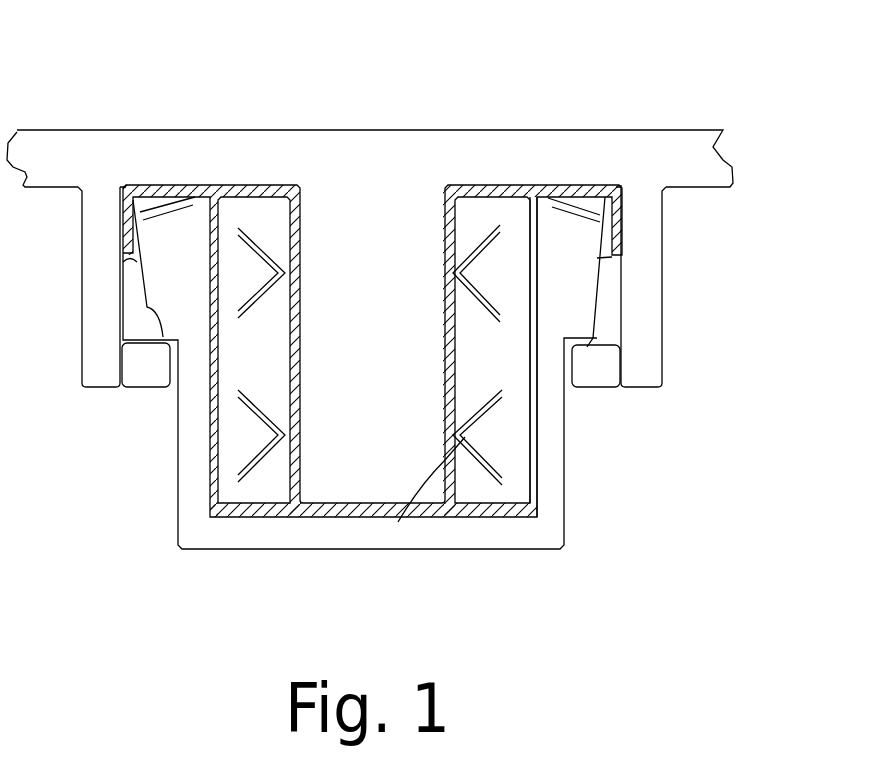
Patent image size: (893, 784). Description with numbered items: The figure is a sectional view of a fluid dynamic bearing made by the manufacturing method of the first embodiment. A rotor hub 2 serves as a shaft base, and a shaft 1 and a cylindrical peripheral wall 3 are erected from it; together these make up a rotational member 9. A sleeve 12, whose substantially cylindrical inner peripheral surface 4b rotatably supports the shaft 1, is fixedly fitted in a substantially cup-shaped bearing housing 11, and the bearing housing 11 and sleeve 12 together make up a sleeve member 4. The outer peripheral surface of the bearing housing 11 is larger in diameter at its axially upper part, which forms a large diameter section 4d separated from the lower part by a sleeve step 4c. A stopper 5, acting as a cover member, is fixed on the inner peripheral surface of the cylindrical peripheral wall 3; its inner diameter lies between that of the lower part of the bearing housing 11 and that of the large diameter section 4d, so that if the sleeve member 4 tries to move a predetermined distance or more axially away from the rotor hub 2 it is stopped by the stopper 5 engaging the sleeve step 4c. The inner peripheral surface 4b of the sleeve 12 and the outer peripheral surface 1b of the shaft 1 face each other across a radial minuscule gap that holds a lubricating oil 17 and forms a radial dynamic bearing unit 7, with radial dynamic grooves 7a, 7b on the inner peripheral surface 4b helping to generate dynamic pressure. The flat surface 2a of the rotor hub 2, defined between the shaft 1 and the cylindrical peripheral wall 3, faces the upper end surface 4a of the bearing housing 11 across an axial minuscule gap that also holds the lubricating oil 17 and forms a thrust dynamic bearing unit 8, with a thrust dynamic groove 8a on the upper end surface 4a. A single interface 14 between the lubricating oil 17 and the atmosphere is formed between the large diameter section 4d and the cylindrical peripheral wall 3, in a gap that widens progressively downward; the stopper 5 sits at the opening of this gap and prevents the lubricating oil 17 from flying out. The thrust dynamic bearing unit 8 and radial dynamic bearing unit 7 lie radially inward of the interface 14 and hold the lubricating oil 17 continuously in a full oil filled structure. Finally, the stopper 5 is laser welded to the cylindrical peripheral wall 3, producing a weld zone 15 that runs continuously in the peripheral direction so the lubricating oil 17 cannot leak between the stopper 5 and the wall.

The shaft 1 is at (338, 323).
The outer peripheral surface of the shaft 1b is at (452, 246).
The rotor hub 2 is at (210, 163).
The flat surface of the rotor hub 2a is at (485, 195).
The cylindrical peripheral wall 3 is at (97, 323).
The sleeve member 4 is at (67, 467).
The upper end surface of the bearing housing 4a is at (593, 183).
The inner peripheral surface of the sleeve 4b is at (432, 362).
The sleeve step 4c is at (147, 307).
The large diameter section 4d is at (625, 252).
The stopper 5 is at (597, 373).
The radial dynamic bearing unit 7 is at (450, 278).
The radial dynamic groove 7a is at (283, 290).
The radial dynamic groove 7b is at (243, 453).
The thrust dynamic bearing unit 8 is at (567, 190).
The thrust dynamic groove 8a is at (168, 203).
The rotational member 9 is at (303, 83).
The bearing housing 11 is at (195, 487).
The sleeve 12 is at (210, 517).
The interface 14 is at (625, 253).
The weld zone 15 is at (623, 385).
The lubricating oil 17 is at (362, 510).